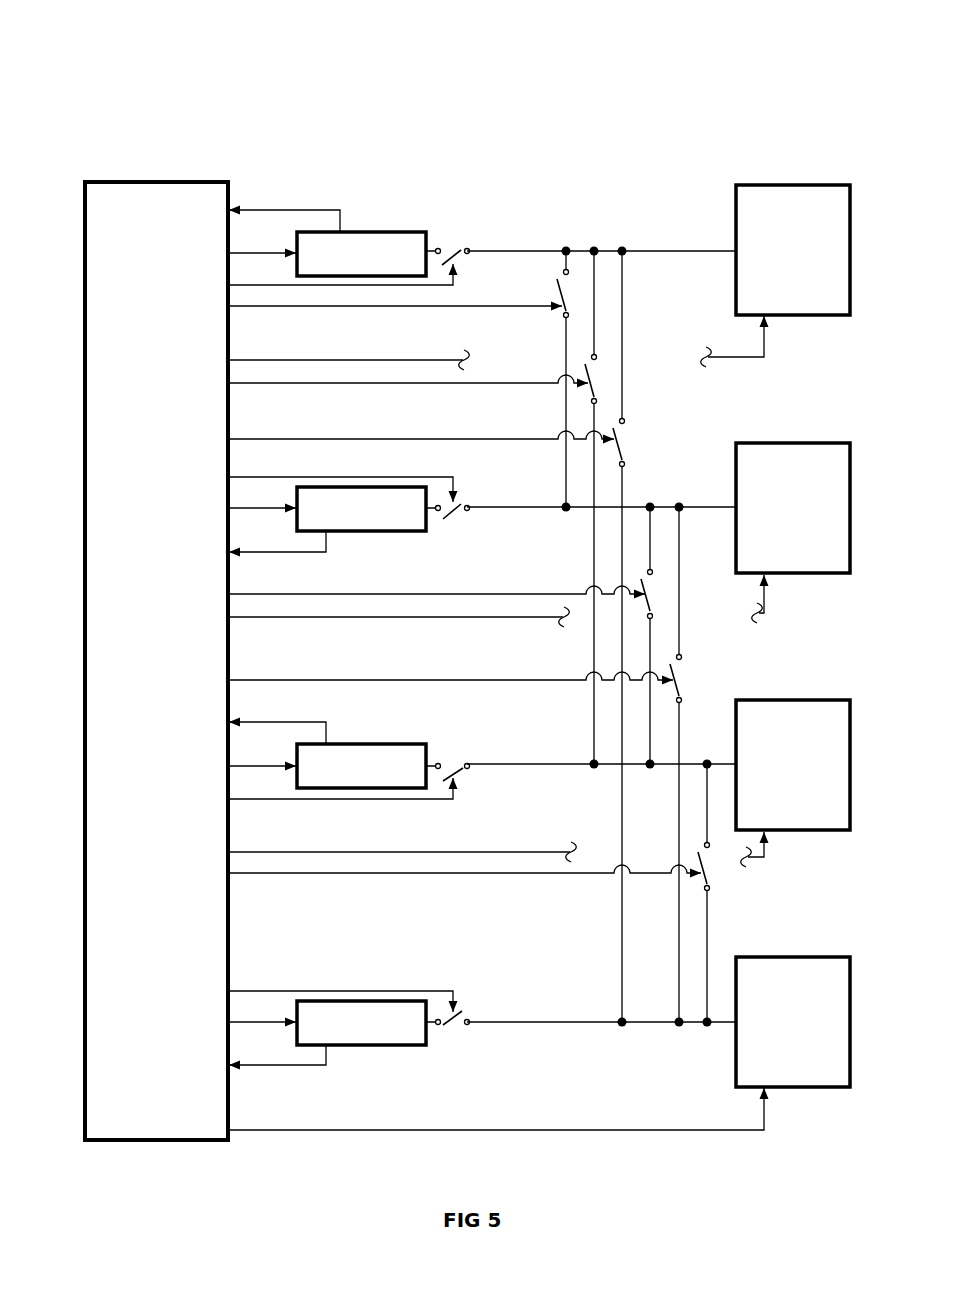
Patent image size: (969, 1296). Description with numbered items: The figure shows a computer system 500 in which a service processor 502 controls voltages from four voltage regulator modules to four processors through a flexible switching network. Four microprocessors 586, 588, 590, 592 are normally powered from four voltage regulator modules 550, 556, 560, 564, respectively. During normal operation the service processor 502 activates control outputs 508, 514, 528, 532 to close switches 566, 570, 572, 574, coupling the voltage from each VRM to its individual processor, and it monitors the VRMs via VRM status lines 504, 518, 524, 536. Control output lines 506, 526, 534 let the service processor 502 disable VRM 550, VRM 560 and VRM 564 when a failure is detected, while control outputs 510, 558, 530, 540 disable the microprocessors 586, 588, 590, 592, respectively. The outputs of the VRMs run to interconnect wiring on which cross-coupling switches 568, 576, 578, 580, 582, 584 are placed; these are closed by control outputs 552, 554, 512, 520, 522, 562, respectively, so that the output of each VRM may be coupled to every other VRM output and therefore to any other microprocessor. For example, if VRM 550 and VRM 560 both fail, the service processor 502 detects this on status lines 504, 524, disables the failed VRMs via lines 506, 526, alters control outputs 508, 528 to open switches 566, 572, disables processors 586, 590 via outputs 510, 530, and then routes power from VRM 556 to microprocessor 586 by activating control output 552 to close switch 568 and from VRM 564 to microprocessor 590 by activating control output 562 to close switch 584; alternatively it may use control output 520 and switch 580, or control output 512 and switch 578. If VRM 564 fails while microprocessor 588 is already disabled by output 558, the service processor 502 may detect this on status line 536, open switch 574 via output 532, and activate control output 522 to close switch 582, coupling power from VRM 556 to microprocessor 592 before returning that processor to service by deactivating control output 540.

The computer system 500 is at (150, 59).
The service processor 502 is at (130, 181).
The VRM status line 504 is at (296, 210).
The control output line 506 is at (292, 251).
The control output 508 is at (292, 285).
The control output 510 is at (292, 360).
The control output 512 is at (292, 439).
The control output 514 is at (292, 477).
The VRM status line 518 is at (292, 552).
The control output 520 is at (292, 594).
The control output 522 is at (292, 680).
The VRM status line 524 is at (292, 722).
The control output line 526 is at (292, 765).
The control output 528 is at (292, 799).
The control output 530 is at (292, 852).
The control output 532 is at (292, 991).
The control output 534 is at (292, 1022).
The VRM status line 536 is at (292, 1065).
The control output 540 is at (292, 1130).
The voltage regulator module 550 is at (361, 254).
The control output 552 is at (430, 306).
The control output 554 is at (430, 384).
The voltage regulator module 556 is at (361, 509).
The control output 558 is at (430, 617).
The voltage regulator module 560 is at (361, 766).
The control output 562 is at (430, 873).
The voltage regulator module 564 is at (361, 1023).
The switch 566 is at (453, 249).
The switch 568 is at (562, 314).
The switch 570 is at (467, 500).
The switch 572 is at (461, 783).
The switch 574 is at (468, 1015).
The switch 576 is at (595, 389).
The switch 578 is at (621, 451).
The switch 580 is at (651, 601).
The switch 582 is at (680, 678).
The switch 584 is at (712, 866).
The microprocessor 586 is at (785, 185).
The microprocessor 588 is at (785, 443).
The microprocessor 590 is at (785, 700).
The microprocessor 592 is at (785, 957).